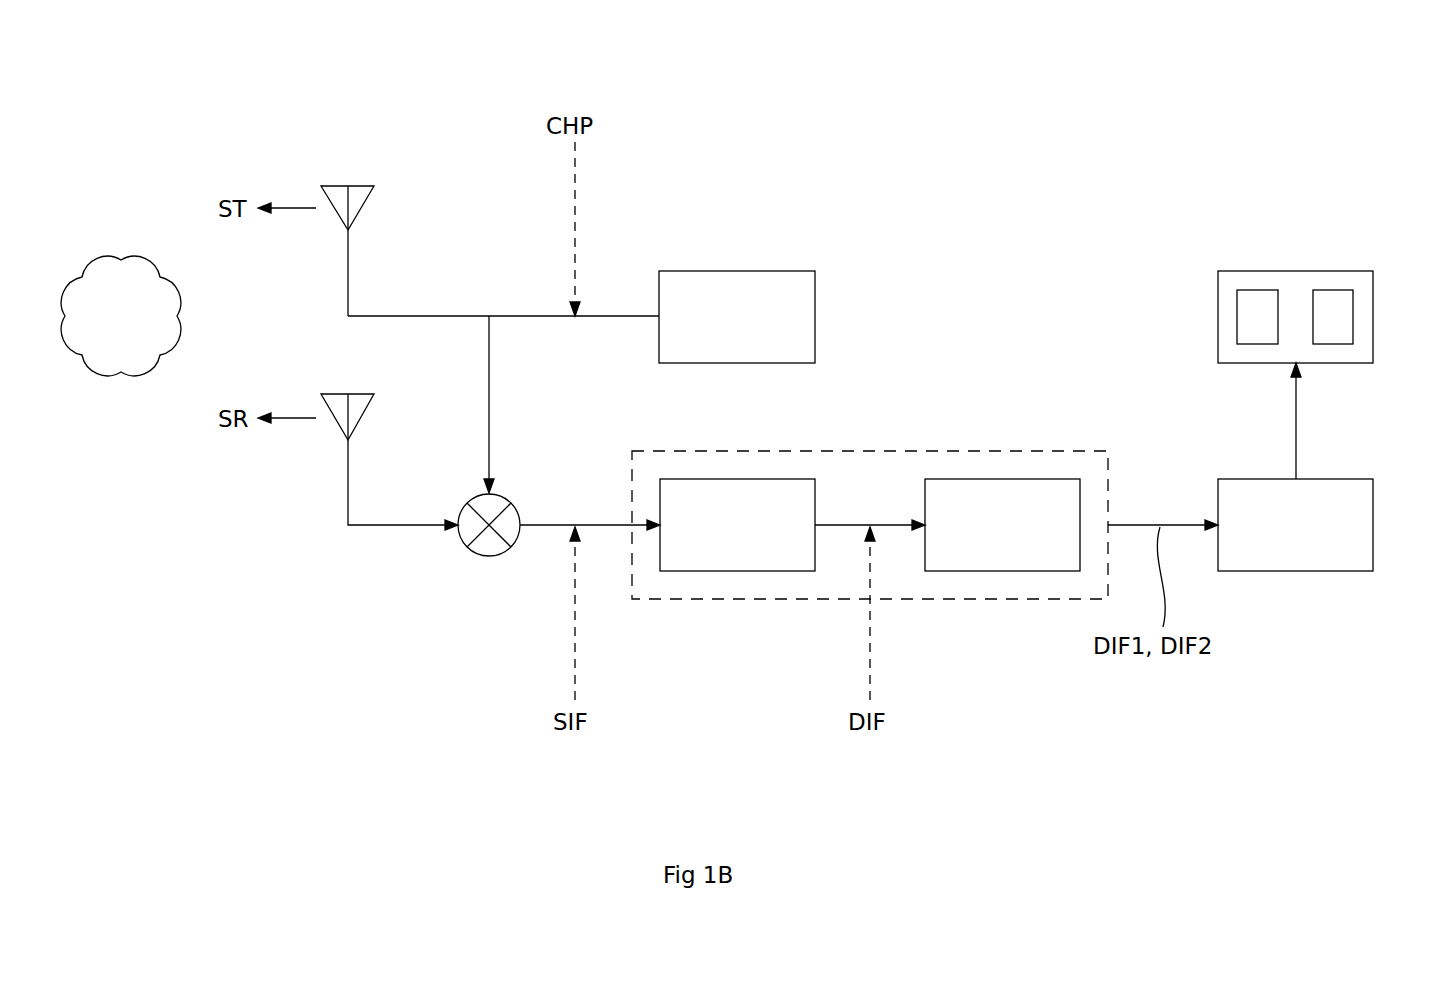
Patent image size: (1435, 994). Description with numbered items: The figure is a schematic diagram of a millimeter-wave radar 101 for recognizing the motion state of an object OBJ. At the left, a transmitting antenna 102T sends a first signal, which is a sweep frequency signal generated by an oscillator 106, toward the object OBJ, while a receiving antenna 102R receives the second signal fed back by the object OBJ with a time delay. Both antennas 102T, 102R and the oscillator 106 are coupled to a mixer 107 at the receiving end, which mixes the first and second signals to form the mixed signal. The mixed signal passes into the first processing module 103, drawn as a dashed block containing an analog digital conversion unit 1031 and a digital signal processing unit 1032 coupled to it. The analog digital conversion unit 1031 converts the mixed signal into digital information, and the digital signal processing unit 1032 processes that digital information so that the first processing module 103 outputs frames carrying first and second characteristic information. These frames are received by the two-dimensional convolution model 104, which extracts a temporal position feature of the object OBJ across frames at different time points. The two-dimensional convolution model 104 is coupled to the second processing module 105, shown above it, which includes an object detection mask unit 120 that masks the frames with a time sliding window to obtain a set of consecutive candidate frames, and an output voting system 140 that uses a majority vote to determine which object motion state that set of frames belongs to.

The millimeter-wave radar 101 is at (93, 84).
The object OBJ is at (110, 255).
The transmitting antenna 102T is at (362, 212).
The receiving antenna 102R is at (362, 422).
The oscillator 106 is at (787, 271).
The mixer 107 is at (486, 558).
The first processing module 103 is at (1062, 450).
The analog digital conversion unit 1031 is at (738, 571).
The digital signal processing unit 1032 is at (1005, 571).
The two-dimensional convolution model 104 is at (1345, 479).
The second processing module 105 is at (1345, 271).
The object detection mask unit 120 is at (1257, 290).
The output voting system 140 is at (1333, 290).